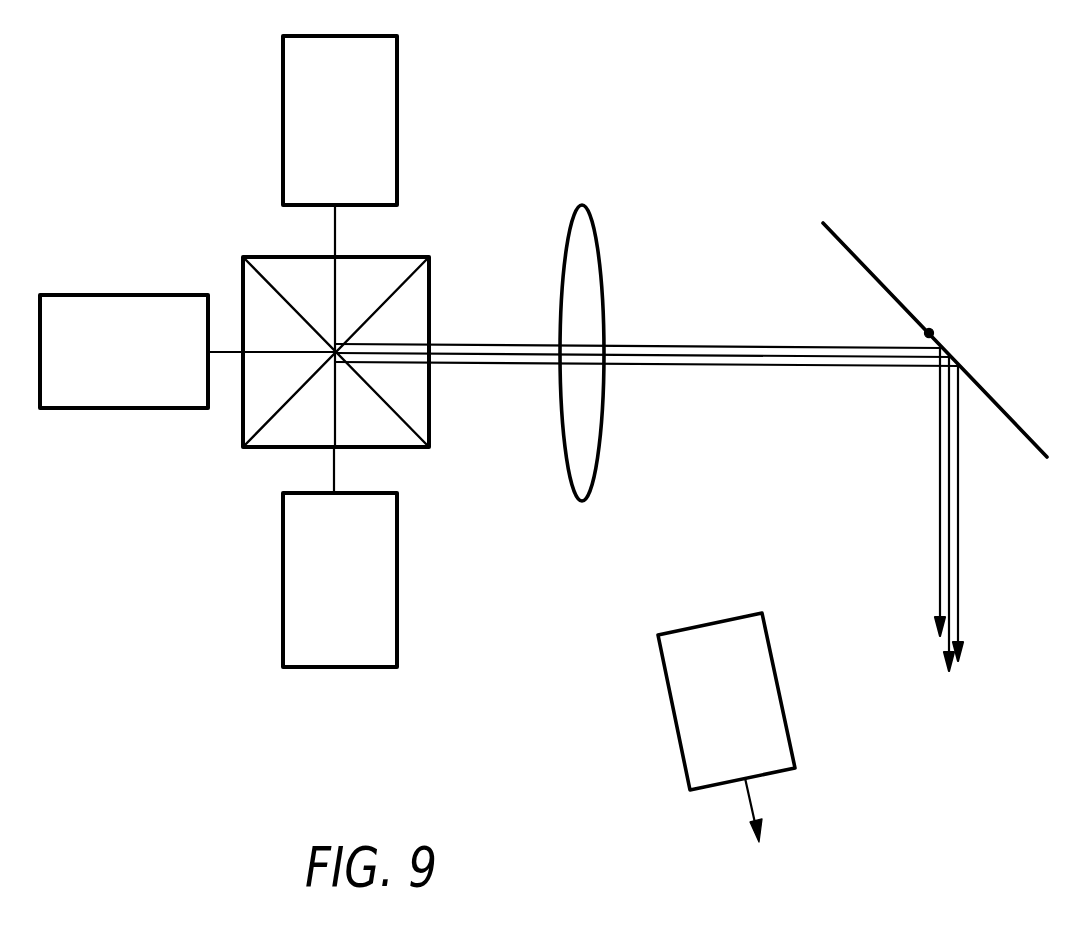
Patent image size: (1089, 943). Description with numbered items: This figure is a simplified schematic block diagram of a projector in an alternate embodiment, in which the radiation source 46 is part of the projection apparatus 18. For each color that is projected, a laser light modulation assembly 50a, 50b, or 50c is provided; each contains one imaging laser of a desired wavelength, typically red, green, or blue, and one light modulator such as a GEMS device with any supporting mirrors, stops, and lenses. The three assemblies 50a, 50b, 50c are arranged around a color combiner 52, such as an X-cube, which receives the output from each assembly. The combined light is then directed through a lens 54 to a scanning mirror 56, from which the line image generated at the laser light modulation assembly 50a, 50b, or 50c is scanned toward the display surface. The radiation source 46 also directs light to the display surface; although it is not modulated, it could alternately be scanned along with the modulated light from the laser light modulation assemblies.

The projection apparatus 18 is at (782, 170).
The radiation source 46 is at (660, 677).
The laser light modulation assembly 50a is at (397, 106).
The laser light modulation assembly 50b is at (84, 295).
The laser light modulation assembly 50c is at (282, 586).
The color combiner 52 is at (429, 426).
The lens 54 is at (600, 438).
The scanning mirror 56 is at (898, 298).